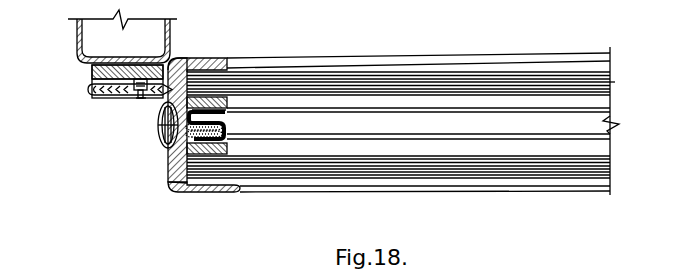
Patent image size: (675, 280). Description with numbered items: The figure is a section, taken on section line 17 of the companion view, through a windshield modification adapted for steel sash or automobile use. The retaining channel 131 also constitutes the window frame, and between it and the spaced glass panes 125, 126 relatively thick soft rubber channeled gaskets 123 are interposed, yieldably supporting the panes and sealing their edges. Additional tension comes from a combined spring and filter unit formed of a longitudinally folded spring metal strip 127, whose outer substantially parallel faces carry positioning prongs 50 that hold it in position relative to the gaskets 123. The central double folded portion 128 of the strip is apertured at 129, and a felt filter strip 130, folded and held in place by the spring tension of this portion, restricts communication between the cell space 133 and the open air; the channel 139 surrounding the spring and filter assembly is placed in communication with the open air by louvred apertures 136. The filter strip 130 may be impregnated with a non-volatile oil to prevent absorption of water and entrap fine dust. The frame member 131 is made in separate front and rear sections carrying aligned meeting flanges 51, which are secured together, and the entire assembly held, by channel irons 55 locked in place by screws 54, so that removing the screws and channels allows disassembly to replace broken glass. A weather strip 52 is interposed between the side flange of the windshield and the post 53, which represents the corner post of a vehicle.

The post 53 is at (79, 44).
The weather strip 52 is at (92, 74).
The meeting flanges 51 is at (91, 90).
The channel irons 55 is at (134, 82).
The screws 54 is at (139, 96).
The section line 17 is at (157, 131).
The channel 139 is at (184, 62).
The retaining channel 131 is at (217, 58).
The positioning prongs 50 is at (170, 166).
The channeled gaskets 123 is at (205, 109).
The central double folded portion 128 is at (226, 126).
The apertures 129 is at (214, 112).
The glass pane 125 is at (222, 133).
The felt filter strip 130 is at (182, 130).
The spring metal strip 127 is at (173, 138).
The louvred apertures 136 is at (144, 143).
The cell space 133 is at (333, 123).
The glass pane 126 is at (274, 179).